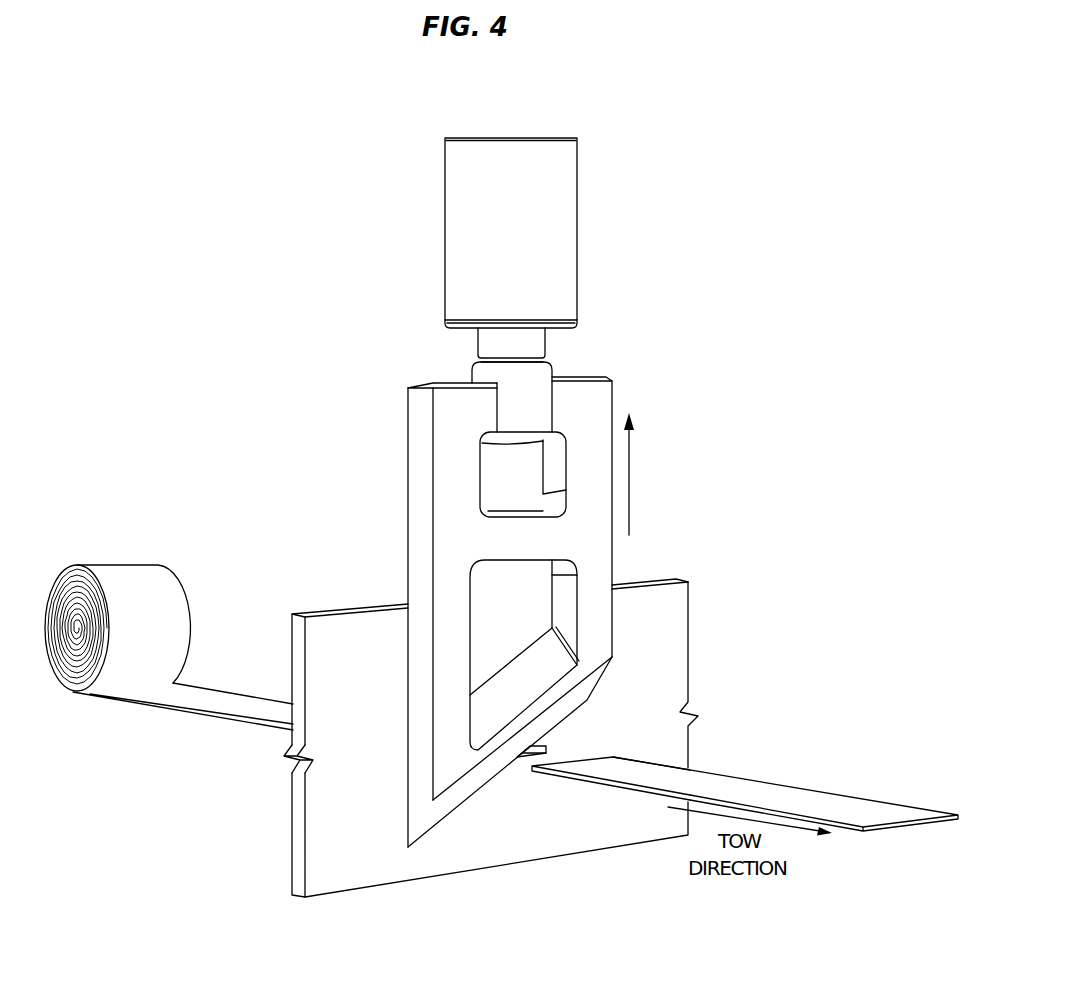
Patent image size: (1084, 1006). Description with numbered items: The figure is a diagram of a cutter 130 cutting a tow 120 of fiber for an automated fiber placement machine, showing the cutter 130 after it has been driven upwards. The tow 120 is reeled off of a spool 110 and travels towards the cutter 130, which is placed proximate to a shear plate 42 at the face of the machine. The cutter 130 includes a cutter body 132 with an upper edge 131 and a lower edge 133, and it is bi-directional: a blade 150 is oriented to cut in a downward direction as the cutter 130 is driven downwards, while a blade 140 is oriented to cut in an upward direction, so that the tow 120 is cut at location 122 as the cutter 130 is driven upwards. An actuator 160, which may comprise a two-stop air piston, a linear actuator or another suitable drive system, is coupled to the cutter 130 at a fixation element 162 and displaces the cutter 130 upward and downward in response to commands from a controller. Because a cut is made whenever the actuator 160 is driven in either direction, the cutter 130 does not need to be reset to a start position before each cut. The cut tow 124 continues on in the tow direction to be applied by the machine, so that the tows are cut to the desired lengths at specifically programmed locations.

The shear plate 42 is at (340, 868).
The spool 110 is at (127, 568).
The tow 120 is at (237, 693).
The location 122 is at (593, 755).
The tow strip output 124 is at (793, 800).
The cutter 130 is at (366, 489).
The upper edge 131 is at (575, 378).
The cutter body 132 is at (424, 545).
The lower edge 133 is at (497, 773).
The blade 140 is at (490, 690).
The blade 150 is at (460, 797).
The actuator 160 is at (552, 210).
The fixation element 162 is at (537, 407).